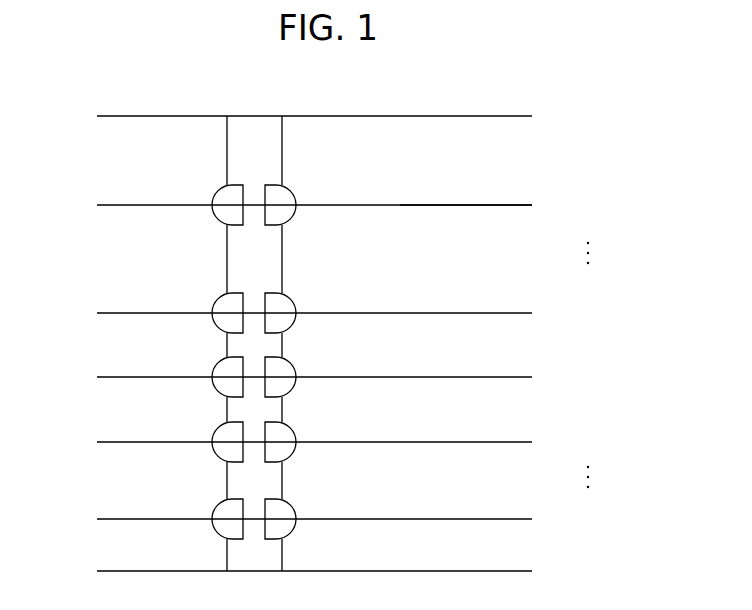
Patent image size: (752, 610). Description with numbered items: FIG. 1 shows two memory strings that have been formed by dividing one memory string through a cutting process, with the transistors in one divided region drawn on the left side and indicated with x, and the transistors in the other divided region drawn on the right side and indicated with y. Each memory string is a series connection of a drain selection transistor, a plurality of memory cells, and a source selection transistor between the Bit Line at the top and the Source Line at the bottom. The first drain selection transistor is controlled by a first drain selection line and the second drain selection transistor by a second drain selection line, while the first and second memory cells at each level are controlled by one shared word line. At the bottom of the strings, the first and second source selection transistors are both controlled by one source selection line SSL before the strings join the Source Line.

The bit line Bit Line is at (358, 117).
The source selection line SSL is at (351, 520).
The source line Source Line is at (366, 573).